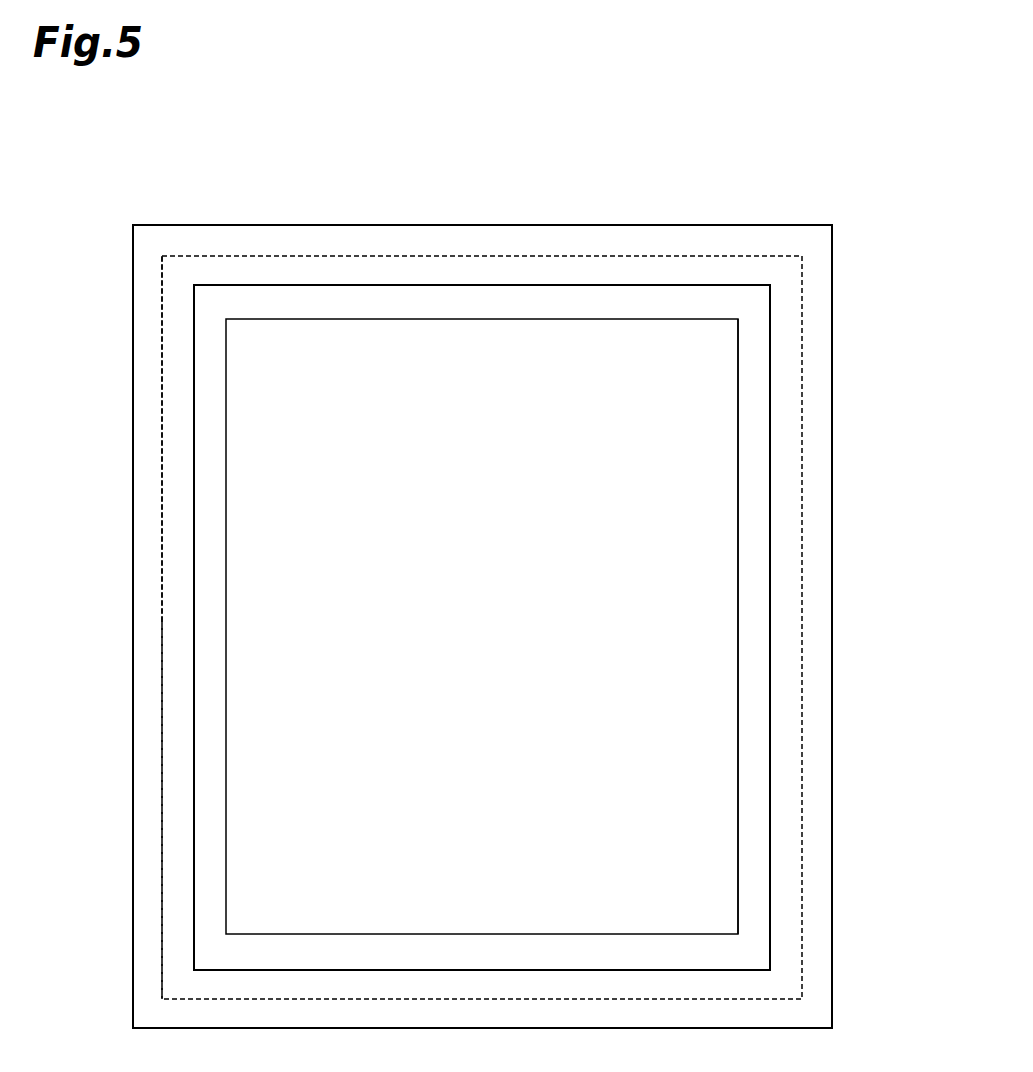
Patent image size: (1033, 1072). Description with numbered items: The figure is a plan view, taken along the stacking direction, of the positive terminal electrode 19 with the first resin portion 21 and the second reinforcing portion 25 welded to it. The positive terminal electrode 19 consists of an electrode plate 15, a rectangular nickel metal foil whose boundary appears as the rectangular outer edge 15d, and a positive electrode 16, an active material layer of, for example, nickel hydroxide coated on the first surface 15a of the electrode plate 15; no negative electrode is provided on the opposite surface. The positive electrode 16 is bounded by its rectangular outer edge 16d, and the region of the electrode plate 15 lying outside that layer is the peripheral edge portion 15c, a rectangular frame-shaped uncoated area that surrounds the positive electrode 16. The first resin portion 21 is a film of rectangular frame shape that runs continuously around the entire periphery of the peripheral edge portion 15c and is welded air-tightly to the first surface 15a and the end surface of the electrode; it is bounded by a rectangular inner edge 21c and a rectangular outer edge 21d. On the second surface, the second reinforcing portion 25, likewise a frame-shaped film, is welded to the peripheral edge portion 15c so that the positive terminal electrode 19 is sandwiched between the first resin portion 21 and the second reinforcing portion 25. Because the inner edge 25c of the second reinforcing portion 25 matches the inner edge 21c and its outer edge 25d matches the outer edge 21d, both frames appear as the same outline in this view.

The positive terminal electrode 19 is at (776, 207).
The first resin portion 21 is at (534, 626).
The second reinforcing portion 25 is at (832, 267).
The outer edge of first resin portion 21d is at (879, 626).
The outer edge of second reinforcing portion 25d is at (832, 372).
The inner edge of first resin portion 21c is at (836, 627).
The inner edge of second reinforcing portion 25c is at (770, 478).
The electrode plate 15 is at (161, 488).
The first surface 15a is at (207, 380).
The peripheral edge portion 15c is at (177, 705).
The outer edge of electrode plate 15d is at (161, 578).
The positive electrode 16 is at (705, 625).
The outer edge of positive electrode 16d is at (738, 707).